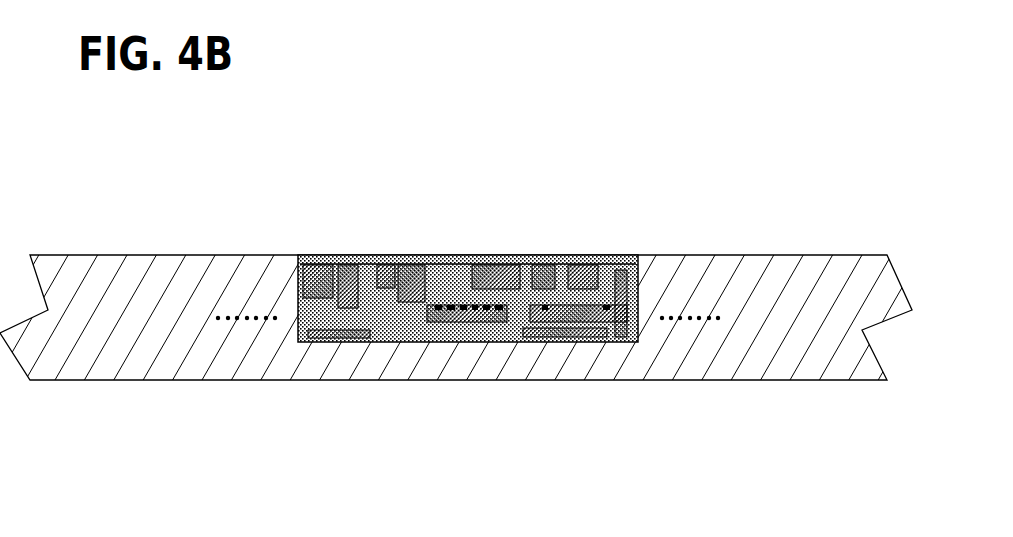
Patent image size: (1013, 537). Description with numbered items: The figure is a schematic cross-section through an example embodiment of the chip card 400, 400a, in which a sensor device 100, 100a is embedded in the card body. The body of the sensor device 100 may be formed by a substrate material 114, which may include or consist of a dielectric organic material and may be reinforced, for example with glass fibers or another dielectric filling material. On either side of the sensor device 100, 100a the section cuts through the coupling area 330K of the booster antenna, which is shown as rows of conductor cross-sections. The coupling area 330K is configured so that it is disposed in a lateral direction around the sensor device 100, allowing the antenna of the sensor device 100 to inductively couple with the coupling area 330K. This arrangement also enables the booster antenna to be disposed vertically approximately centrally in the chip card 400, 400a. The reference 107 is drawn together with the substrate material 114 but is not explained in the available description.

The sensor device 100 is at (468, 248).
The sensor device 100a is at (412, 257).
The chip card 400 is at (475, 298).
The chip card 400a is at (475, 298).
The encapsulation body 107 is at (475, 367).
The substrate material 114 is at (475, 367).
The coupling area 330K is at (695, 318).